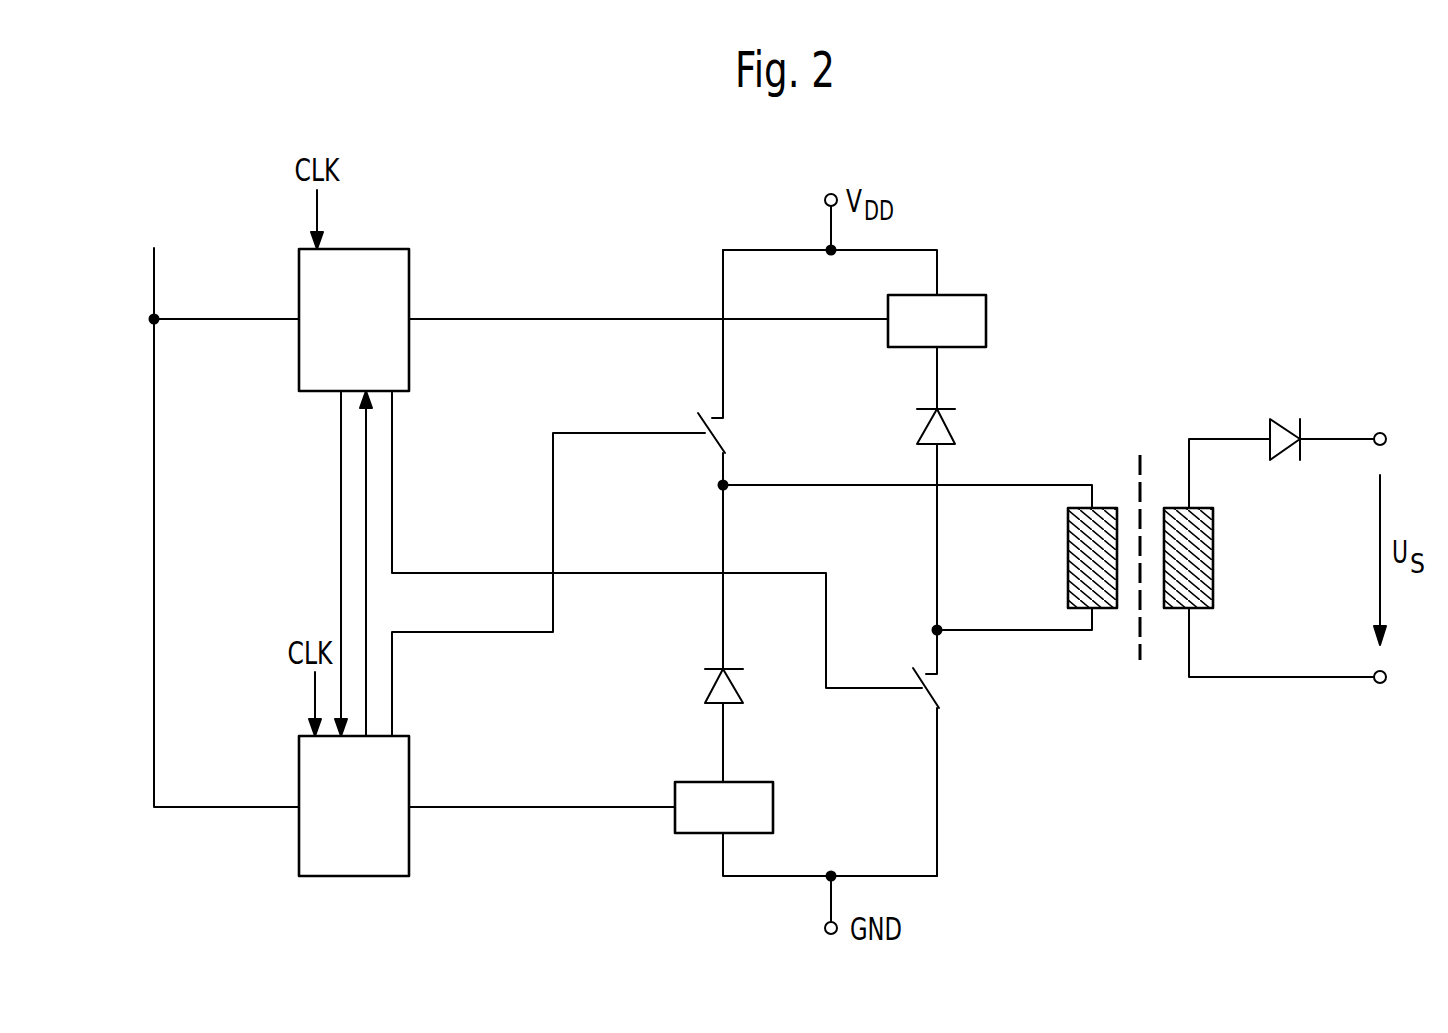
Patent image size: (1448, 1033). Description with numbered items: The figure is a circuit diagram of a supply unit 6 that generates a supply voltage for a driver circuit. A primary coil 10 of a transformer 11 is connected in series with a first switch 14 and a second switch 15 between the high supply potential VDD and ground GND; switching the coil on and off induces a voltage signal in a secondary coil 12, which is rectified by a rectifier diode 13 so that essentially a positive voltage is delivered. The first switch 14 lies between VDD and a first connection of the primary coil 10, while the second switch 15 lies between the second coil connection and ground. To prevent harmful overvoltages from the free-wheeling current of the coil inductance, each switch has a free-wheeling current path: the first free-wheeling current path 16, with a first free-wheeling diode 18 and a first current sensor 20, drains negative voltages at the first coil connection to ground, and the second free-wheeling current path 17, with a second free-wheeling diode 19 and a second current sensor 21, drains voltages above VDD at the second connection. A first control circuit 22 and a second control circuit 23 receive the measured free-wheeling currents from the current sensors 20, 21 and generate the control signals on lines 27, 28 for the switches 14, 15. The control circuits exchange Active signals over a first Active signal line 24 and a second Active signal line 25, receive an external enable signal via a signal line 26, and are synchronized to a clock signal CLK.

The supply unit 6 is at (1060, 218).
The primary coil 10 is at (1068, 558).
The transformer 11 is at (1140, 437).
The secondary coil 12 is at (1215, 557).
The rectifier diode 13 is at (1283, 425).
The first switch 14 is at (725, 428).
The second switch 15 is at (938, 688).
The first free-wheeling current path 16 is at (685, 742).
The second free-wheeling current path 17 is at (968, 373).
The first free-wheeling diode 18 is at (705, 685).
The second free-wheeling diode 19 is at (925, 428).
The first current sensor 20 is at (763, 808).
The second current sensor 21 is at (987, 318).
The first control circuit 22 is at (312, 847).
The second control circuit 23 is at (312, 357).
The first Active signal line 24 is at (368, 596).
The second Active signal line 25 is at (340, 552).
The signal line 26 is at (152, 528).
The line 27 is at (392, 645).
The line 28 is at (395, 440).